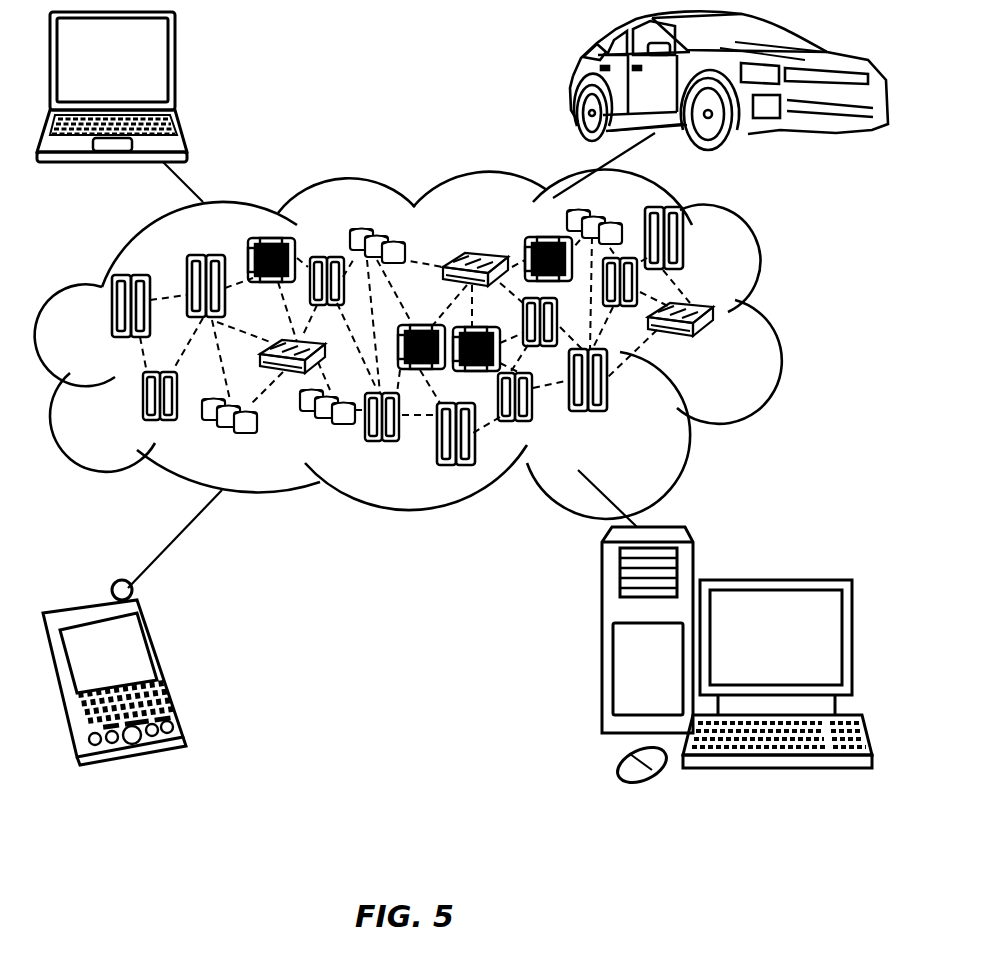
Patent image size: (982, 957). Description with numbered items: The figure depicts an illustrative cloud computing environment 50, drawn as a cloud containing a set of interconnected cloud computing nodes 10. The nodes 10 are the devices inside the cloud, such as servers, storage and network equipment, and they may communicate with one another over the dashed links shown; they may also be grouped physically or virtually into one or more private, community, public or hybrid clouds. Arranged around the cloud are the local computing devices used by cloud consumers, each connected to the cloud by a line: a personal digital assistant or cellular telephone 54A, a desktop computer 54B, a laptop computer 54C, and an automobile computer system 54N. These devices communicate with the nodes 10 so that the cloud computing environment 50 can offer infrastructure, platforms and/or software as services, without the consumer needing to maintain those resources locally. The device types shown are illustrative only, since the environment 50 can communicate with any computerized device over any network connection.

The cloud computing node 10 is at (730, 345).
The cloud computing environment 50 is at (773, 313).
The personal digital assistant (PDA) or cellular telephone 54A is at (167, 658).
The desktop computer 54B is at (772, 580).
The laptop computer 54C is at (176, 67).
The automobile computer system 54N is at (573, 78).